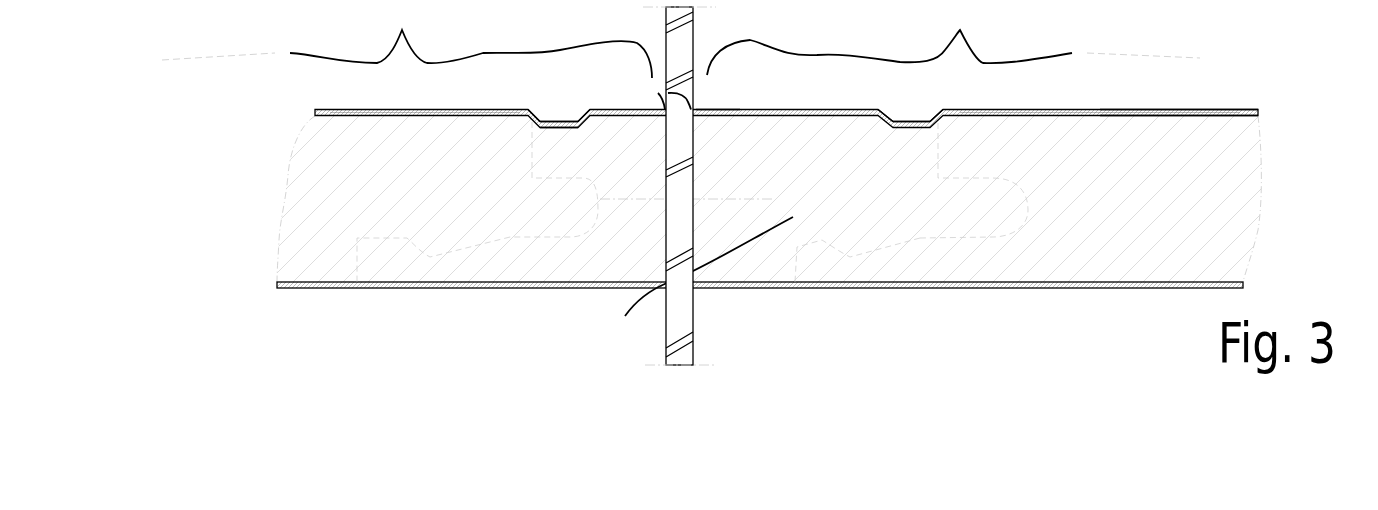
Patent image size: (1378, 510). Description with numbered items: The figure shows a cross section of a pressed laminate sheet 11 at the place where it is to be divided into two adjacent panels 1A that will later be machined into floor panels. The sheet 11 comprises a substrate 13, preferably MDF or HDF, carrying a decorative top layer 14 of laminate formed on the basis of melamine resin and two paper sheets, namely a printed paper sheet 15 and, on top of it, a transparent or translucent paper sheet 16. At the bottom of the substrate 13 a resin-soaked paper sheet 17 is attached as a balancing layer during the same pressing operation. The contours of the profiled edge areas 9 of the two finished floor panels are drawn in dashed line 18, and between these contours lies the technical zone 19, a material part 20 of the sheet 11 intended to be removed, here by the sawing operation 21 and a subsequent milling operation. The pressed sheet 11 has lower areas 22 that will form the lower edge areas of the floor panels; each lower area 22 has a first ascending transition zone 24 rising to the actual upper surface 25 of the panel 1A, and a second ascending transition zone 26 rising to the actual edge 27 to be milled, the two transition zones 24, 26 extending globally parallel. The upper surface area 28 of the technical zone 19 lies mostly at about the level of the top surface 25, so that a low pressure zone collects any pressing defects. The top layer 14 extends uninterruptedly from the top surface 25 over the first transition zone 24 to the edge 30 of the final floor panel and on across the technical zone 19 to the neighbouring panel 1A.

The profiled edge area 9 is at (487, 243).
The laminate sheet 11 is at (1305, 185).
The substrate 13 is at (410, 199).
The decorative top layer 14 is at (300, 113).
The printed paper sheet 15 is at (1188, 112).
The transparent or translucent paper sheet 16 is at (1127, 111).
The paper sheet 17 is at (1043, 283).
The dashed line 18 is at (532, 237).
The technical zone 19 is at (743, 178).
The material part 20 is at (643, 223).
The sawing operation 21 is at (682, 302).
The lower area 22 is at (560, 113).
The first ascending transition zone 24 is at (538, 110).
The upper surface 25 is at (378, 109).
The second ascending transition zone 26 is at (580, 115).
The edge 27 is at (668, 93).
The upper surface area 28 is at (712, 110).
The edge of the top surface 30 is at (537, 122).
The panel 1A is at (681, 39).